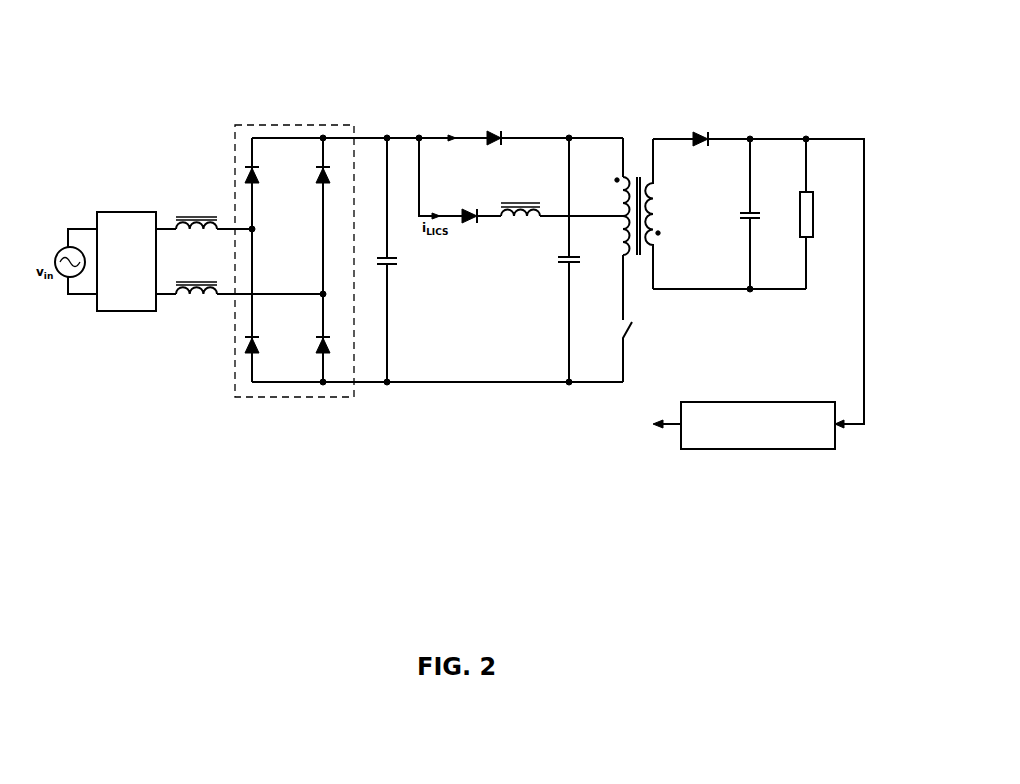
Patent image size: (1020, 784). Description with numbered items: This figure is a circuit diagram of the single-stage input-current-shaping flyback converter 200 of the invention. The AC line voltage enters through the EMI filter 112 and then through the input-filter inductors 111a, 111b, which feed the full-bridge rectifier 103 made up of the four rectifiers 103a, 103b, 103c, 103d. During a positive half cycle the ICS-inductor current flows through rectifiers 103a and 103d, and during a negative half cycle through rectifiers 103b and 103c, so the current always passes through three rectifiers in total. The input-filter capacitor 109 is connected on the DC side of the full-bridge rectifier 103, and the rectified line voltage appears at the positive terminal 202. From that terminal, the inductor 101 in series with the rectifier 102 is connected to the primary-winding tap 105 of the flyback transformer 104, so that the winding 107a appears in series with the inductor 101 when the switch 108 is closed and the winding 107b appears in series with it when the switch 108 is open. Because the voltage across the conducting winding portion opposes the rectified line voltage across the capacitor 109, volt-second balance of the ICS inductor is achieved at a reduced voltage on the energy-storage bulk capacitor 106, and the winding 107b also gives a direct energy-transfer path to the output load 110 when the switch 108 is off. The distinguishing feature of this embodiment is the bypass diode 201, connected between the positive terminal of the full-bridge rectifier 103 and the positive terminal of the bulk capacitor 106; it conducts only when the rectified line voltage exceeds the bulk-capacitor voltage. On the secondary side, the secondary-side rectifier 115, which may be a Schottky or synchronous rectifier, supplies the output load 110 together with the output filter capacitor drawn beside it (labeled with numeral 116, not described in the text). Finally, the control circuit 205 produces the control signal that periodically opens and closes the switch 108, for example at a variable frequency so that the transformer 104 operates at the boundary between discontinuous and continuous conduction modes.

The S²ICS flyback converter 200 is at (534, 58).
The EMI filter 112 is at (130, 212).
The input-filter inductor 111a is at (195, 231).
The input-filter inductor 111b is at (195, 296).
The full-bridge rectifier 103 is at (429, 236).
The rectifier 103a is at (258, 185).
The rectifier 103b is at (317, 185).
The rectifier 103c is at (258, 335).
The rectifier 103d is at (317, 335).
The input-filter capacitor 109 is at (376, 266).
The terminal 202 is at (405, 136).
The bypass diode 201 is at (503, 137).
The rectifier 102 is at (468, 222).
The inductor 101 is at (520, 222).
The energy-storage (bulk) capacitor 106 is at (562, 268).
The primary-winding tap 105 is at (590, 213).
The winding 107b is at (613, 183).
The winding 107a is at (623, 246).
The flyback transformer 104 is at (630, 208).
The switch 108 is at (622, 333).
The secondary-side rectifier 115 is at (702, 137).
The output capacitor CF 116 is at (750, 222).
The output load 110 is at (815, 203).
The control circuit 205 is at (758, 401).